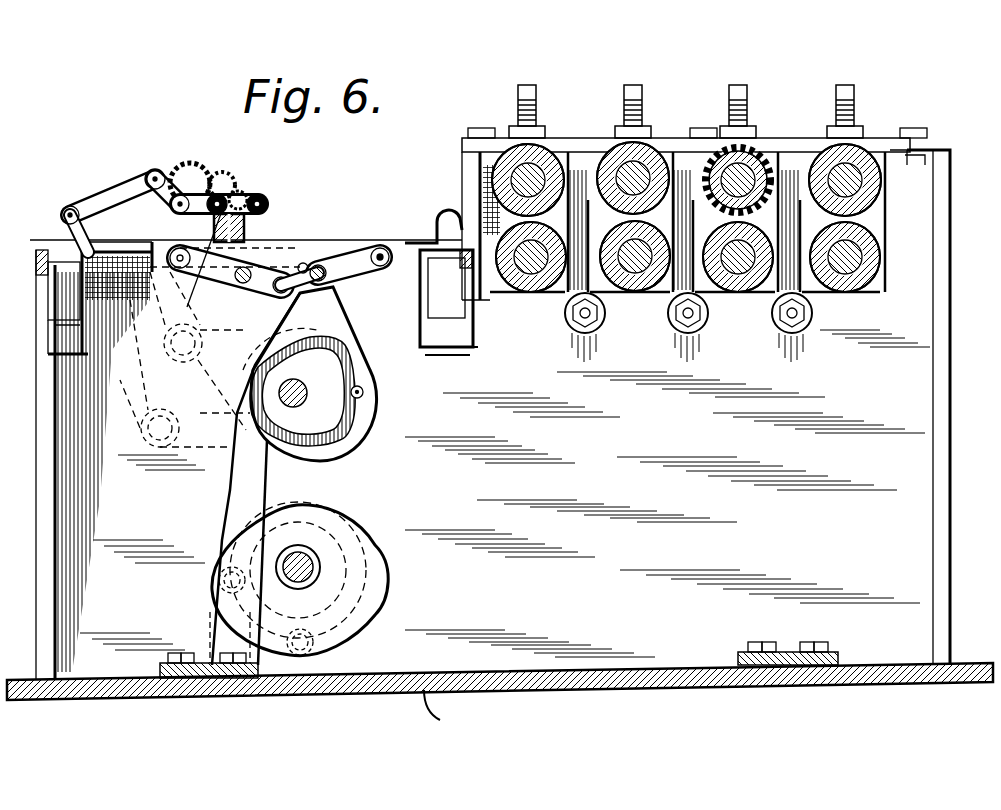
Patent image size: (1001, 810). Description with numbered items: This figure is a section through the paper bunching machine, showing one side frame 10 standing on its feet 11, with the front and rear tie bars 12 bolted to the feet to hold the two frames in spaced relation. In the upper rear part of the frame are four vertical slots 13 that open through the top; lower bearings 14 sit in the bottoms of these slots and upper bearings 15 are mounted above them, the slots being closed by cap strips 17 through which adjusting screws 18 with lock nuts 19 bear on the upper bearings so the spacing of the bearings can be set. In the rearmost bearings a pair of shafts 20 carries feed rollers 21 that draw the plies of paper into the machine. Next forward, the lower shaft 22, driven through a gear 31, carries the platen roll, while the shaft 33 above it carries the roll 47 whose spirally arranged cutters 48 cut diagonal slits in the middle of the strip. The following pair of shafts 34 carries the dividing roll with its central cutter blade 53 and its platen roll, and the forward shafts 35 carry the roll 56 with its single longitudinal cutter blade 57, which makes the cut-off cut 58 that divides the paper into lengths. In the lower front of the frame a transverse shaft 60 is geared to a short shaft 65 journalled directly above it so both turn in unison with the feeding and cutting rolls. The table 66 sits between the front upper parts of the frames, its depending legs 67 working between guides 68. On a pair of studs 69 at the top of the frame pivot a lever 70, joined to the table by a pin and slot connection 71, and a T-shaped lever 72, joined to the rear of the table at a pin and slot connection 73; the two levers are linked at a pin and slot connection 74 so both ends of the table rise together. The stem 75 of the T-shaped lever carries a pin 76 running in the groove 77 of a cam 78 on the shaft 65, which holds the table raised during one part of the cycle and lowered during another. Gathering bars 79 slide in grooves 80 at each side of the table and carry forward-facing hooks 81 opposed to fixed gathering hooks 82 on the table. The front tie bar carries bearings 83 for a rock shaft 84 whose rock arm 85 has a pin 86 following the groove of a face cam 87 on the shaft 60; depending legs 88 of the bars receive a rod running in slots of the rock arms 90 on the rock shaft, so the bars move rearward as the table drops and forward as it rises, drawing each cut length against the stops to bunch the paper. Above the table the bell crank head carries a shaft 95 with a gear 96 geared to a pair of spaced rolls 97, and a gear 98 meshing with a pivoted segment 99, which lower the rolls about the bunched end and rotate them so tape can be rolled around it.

The side frame 10 is at (928, 375).
The feet 11 is at (622, 683).
The tie bar 12 is at (190, 690).
The vertical slot 13 is at (505, 220).
The bearing 14 is at (498, 300).
The upper bearing 15 is at (648, 142).
The cap strip 17 is at (905, 140).
The adjusting screw 18 is at (622, 93).
The lock nut 19 is at (613, 131).
The shaft 20 is at (862, 263).
The feed roller 21 is at (905, 160).
The shaft 22 is at (736, 292).
The gear 31 is at (716, 288).
The shaft 33 is at (755, 150).
The shaft 34 is at (655, 170).
The shaft 35 is at (515, 185).
The roll 47 is at (725, 158).
The cutter 48 is at (778, 152).
The central cutter blade 53 is at (640, 216).
The roll 56 is at (472, 152).
The cutter blade 57 is at (520, 140).
The cut 58 is at (530, 312).
The transverse shaft 60 is at (304, 560).
The short shaft 65 is at (280, 395).
The table 66 is at (152, 262).
The depending leg 67 is at (60, 300).
The guide 68 is at (80, 348).
The stud 69 is at (314, 268).
The lever 70 is at (212, 312).
The pin and slot connection 71 is at (180, 256).
The T-shaped lever 72 is at (350, 258).
The pin and slot connection 73 is at (382, 254).
The pin and slot connection 74 is at (271, 301).
The stem 75 is at (345, 340).
The pin 76 is at (366, 396).
The groove 77 is at (345, 450).
The cam 78 is at (302, 460).
The gathering bar 79 is at (246, 270).
The groove 80 is at (52, 250).
The hook 81 is at (436, 224).
The fixed gathering hook 82 is at (205, 259).
The bearing 83 is at (196, 660).
The rock shaft 84 is at (222, 636).
The rock arm 85 is at (298, 570).
The pin 86 is at (332, 654).
The face cam 87 is at (386, 598).
The depending leg 88 is at (310, 262).
The rock arm 90 is at (226, 515).
The shaft 95 is at (246, 190).
The gear 96 is at (222, 184).
The roll 97 is at (198, 180).
The gear 98 is at (238, 192).
The segment 99 is at (162, 175).